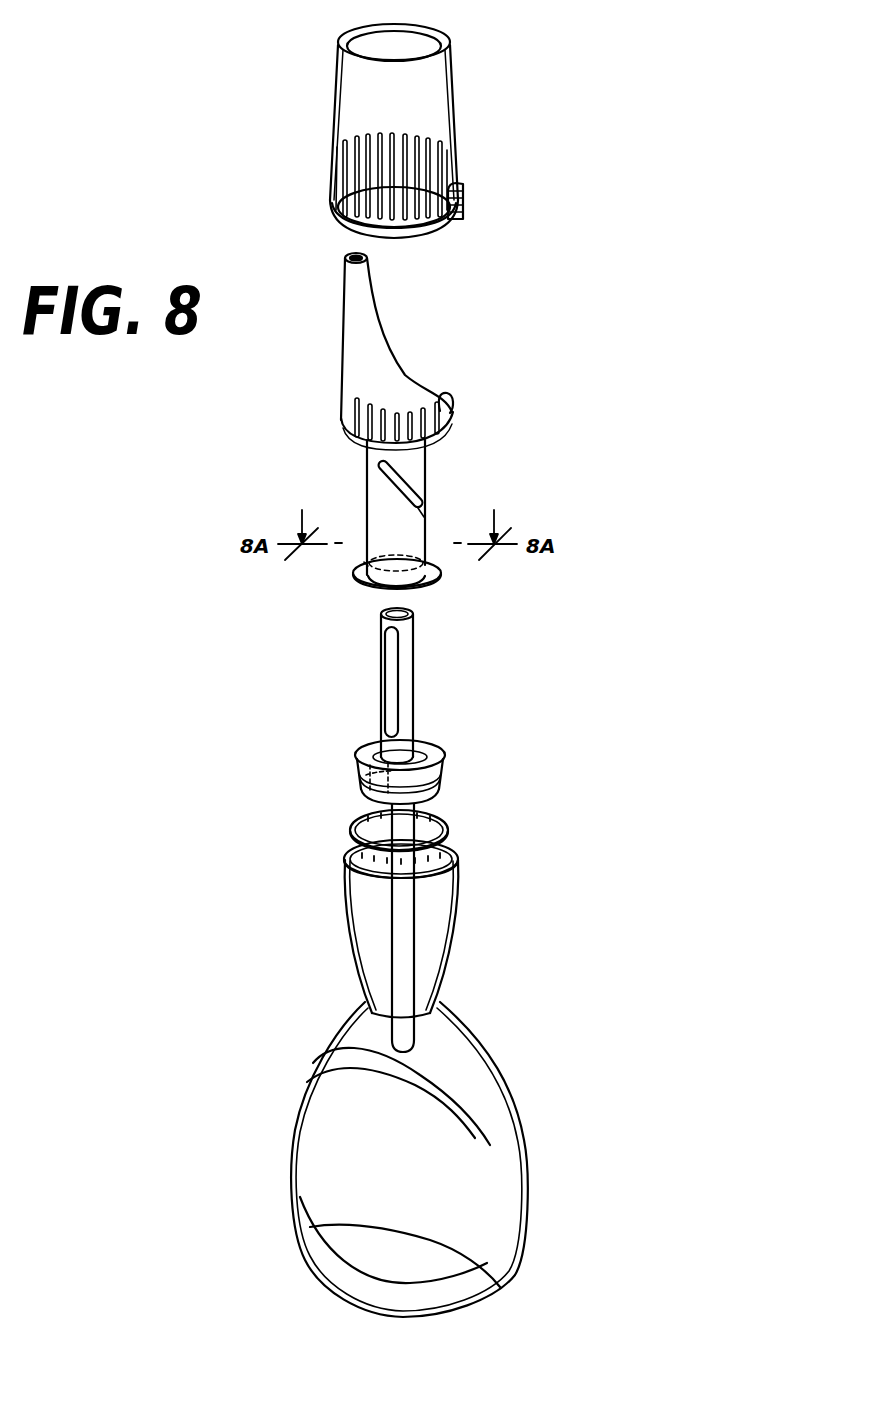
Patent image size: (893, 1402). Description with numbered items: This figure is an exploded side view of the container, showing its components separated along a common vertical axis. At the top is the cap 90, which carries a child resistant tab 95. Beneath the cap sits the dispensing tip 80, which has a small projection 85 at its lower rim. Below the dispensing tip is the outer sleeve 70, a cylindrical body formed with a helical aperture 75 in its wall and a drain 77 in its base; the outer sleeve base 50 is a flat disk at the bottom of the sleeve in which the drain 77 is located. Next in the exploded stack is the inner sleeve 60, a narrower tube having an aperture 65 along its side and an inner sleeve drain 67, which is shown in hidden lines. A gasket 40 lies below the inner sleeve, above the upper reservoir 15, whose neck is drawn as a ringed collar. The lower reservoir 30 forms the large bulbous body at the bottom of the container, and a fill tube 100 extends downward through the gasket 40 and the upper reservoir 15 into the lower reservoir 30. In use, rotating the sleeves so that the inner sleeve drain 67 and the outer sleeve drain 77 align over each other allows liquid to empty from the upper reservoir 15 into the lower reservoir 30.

The cap 90 is at (452, 88).
The child resistant tab 95 is at (465, 198).
The dispensing tip 80 is at (400, 352).
The nozzle tab 85 is at (452, 413).
The outer sleeve 70 is at (367, 453).
The helical aperture 75 is at (417, 510).
The drain 77 is at (363, 563).
The outer sleeve base 50 is at (440, 577).
The inner sleeve 60 is at (415, 678).
The aperture 65 is at (393, 685).
The gasket 40 is at (440, 783).
The inner sleeve drain 67 is at (360, 788).
The upper reservoir 15 is at (458, 912).
The fill tube 100 is at (390, 938).
The lower reservoir 30 is at (510, 1113).